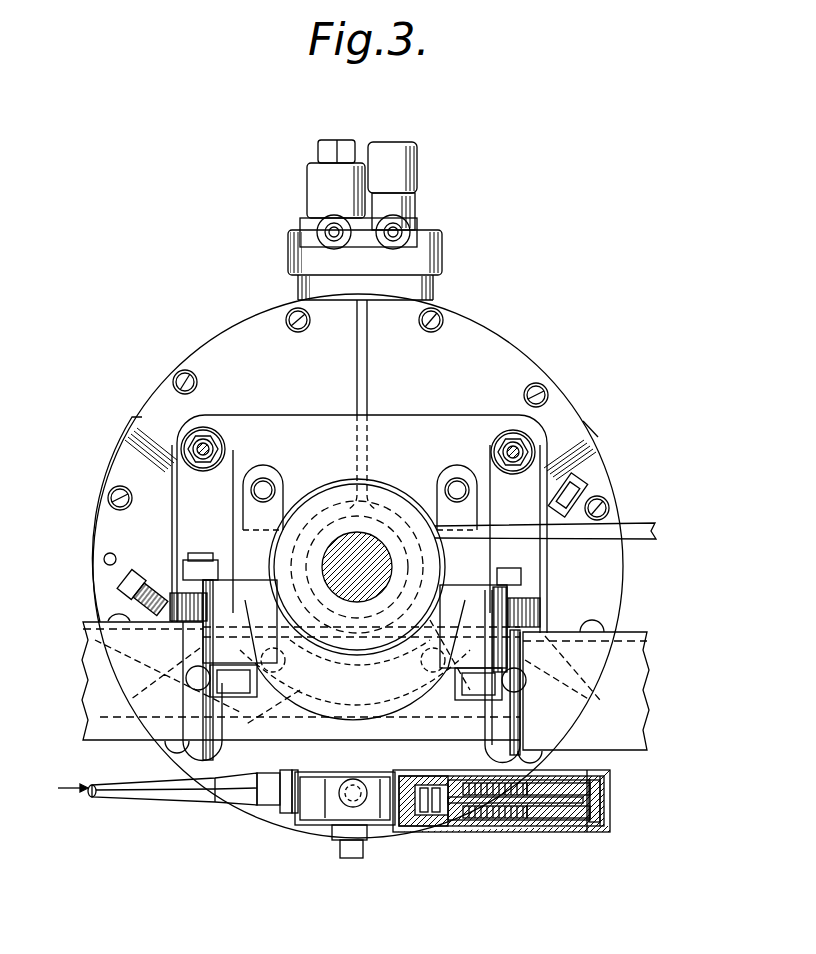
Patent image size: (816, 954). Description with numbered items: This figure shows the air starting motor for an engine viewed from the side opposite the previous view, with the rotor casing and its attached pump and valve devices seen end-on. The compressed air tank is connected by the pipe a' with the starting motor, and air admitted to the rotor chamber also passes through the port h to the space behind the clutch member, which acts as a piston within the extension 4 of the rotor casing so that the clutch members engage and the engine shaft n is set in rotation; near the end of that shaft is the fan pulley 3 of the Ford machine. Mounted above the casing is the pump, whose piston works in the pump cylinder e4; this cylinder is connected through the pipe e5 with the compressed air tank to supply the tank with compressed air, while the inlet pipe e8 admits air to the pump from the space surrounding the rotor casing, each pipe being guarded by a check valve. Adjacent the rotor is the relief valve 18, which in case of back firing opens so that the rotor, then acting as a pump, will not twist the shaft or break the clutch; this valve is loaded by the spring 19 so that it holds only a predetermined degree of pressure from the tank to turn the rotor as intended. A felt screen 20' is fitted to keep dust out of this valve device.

The pipe e5 is at (326, 230).
The inlet pipe e8 is at (403, 233).
The pump cylinder e4 is at (432, 300).
The fan pulley 3 is at (372, 485).
The engine shaft n is at (352, 548).
The extension of the rotor casing 4 is at (388, 508).
The port h is at (350, 755).
The pipe a' is at (178, 805).
The relief valve 18 is at (427, 837).
The spring 19 is at (497, 815).
The felt screen 20' is at (590, 825).